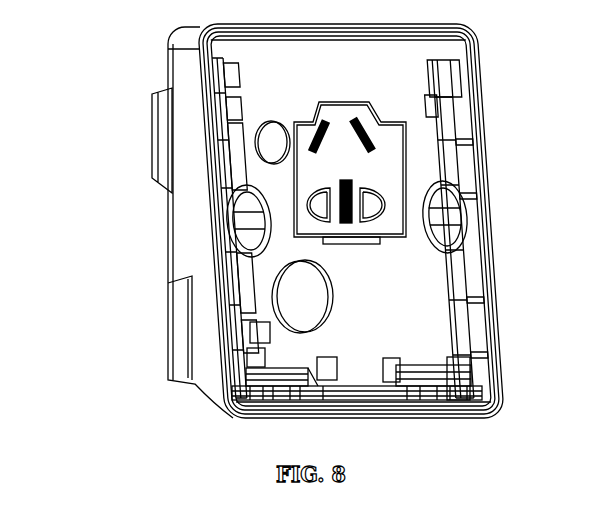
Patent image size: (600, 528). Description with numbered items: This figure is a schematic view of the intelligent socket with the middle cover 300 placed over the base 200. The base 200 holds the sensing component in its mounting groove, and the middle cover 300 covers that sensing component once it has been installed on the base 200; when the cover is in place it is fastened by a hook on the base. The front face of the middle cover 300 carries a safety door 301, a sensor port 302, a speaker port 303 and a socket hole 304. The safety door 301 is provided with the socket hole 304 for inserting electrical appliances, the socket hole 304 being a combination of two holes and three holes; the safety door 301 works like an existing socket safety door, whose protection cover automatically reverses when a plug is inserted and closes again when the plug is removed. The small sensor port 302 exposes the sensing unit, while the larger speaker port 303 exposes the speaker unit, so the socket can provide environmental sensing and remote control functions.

The base 200 is at (163, 140).
The middle cover 300 is at (474, 35).
The safety door 301 is at (383, 113).
The sensor port 302 is at (273, 122).
The speaker port 303 is at (322, 294).
The socket hole 304 is at (468, 228).